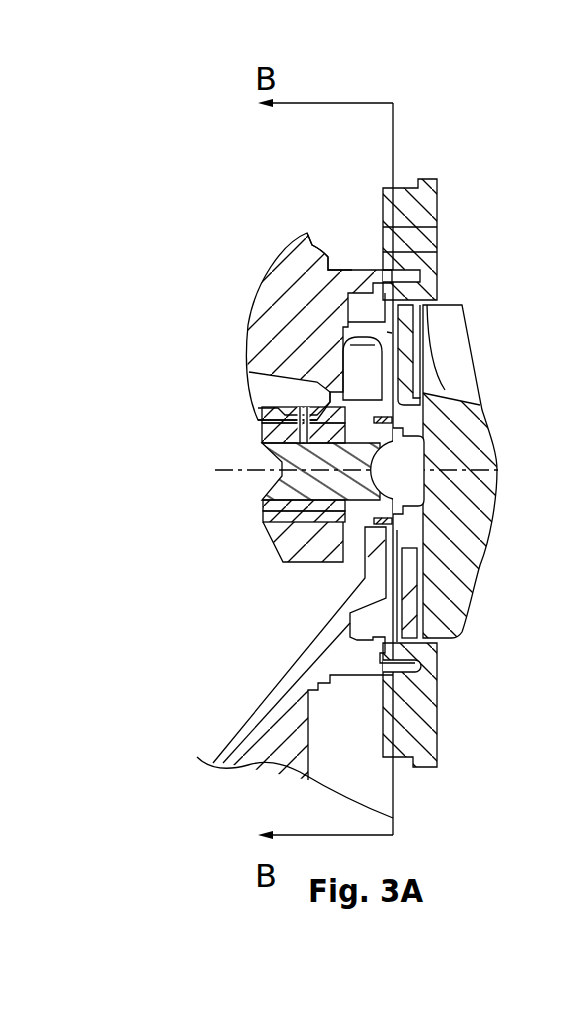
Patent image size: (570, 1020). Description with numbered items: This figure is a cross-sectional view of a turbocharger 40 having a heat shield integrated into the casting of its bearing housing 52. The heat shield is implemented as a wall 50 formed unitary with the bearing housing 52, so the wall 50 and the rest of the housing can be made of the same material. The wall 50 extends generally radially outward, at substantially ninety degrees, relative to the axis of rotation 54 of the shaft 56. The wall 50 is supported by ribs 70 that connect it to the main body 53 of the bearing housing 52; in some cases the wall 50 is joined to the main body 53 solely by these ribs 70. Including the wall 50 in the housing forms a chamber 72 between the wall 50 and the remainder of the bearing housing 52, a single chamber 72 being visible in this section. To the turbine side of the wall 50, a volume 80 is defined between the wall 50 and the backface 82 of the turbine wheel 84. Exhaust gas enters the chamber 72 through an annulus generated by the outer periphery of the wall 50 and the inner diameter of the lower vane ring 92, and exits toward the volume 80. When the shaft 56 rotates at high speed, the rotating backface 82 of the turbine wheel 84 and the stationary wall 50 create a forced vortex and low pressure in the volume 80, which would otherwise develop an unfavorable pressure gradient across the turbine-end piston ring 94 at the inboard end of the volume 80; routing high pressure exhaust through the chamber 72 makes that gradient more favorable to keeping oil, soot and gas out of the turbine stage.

The turbocharger 40 is at (181, 591).
The wall 50 is at (388, 368).
The bearing housing 52 is at (332, 218).
The main body 53 is at (295, 252).
The axis of rotation 54 is at (228, 472).
The shaft 56 is at (292, 458).
The ribs 70 is at (390, 333).
The chamber 72 is at (388, 383).
The volume 80 is at (425, 396).
The backface 82 is at (434, 542).
The turbine wheel 84 is at (455, 503).
The lower vane ring 92 is at (422, 182).
The piston ring 94 is at (380, 552).